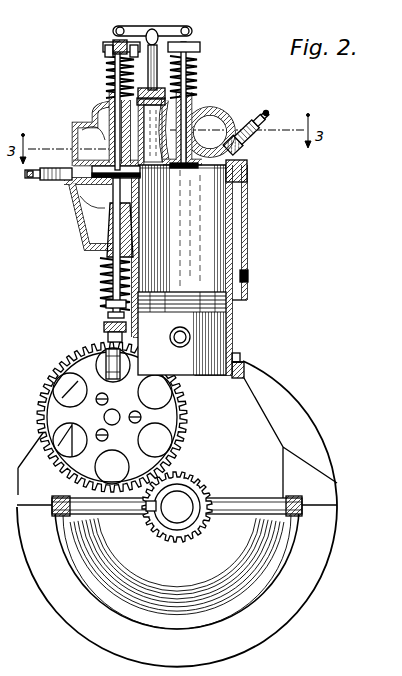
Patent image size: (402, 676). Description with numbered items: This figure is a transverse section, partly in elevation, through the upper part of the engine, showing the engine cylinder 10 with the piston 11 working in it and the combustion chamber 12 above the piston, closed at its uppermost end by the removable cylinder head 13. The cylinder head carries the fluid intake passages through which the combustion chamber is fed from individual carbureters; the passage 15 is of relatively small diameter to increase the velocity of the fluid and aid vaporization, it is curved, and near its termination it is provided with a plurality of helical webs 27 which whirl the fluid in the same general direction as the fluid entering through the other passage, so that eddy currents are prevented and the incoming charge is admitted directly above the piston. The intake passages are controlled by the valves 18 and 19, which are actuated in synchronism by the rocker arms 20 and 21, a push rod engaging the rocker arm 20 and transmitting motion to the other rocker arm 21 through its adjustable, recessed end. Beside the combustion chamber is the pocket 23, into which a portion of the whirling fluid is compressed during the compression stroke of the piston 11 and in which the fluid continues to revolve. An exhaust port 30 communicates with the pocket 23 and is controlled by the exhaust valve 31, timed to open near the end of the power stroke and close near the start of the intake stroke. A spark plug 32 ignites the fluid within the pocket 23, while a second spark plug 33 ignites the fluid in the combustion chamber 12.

The engine cylinder 10 is at (232, 252).
The piston 11 is at (208, 324).
The combustion chamber 12 is at (140, 170).
The removable cylinder head 13 is at (237, 112).
The fluid intake passage 15 is at (205, 98).
The valve 18 is at (110, 160).
The valve 19 is at (93, 118).
The rocker arm 20 is at (113, 42).
The rocker arm 21 is at (186, 29).
The pocket 23 is at (110, 172).
The helical webs 27 is at (224, 110).
The exhaust port 30 is at (92, 212).
The exhaust valve 31 is at (110, 200).
The spark plug 32 is at (44, 179).
The spark plug 33 is at (266, 116).